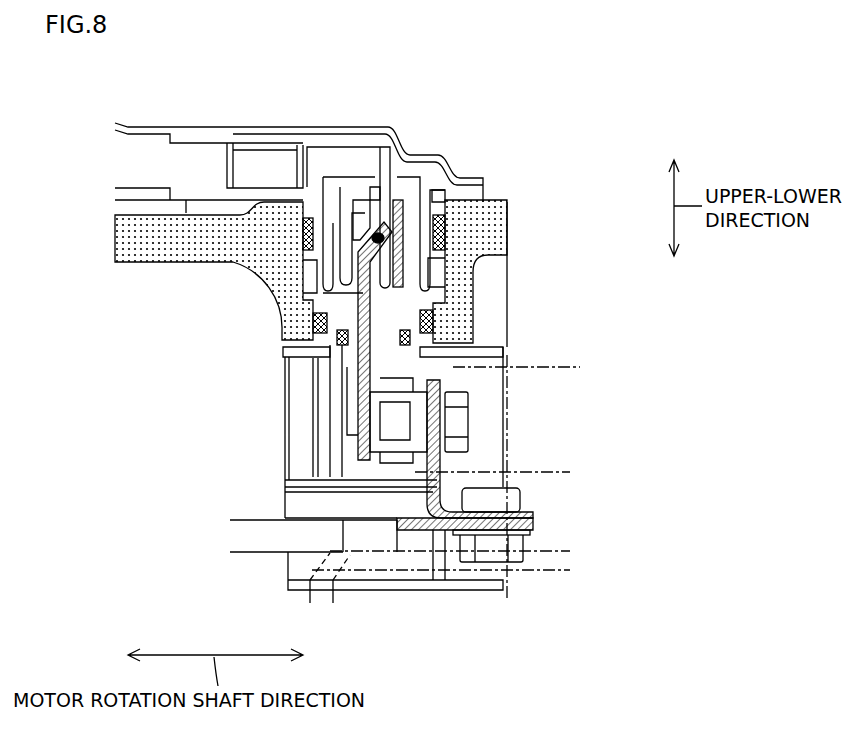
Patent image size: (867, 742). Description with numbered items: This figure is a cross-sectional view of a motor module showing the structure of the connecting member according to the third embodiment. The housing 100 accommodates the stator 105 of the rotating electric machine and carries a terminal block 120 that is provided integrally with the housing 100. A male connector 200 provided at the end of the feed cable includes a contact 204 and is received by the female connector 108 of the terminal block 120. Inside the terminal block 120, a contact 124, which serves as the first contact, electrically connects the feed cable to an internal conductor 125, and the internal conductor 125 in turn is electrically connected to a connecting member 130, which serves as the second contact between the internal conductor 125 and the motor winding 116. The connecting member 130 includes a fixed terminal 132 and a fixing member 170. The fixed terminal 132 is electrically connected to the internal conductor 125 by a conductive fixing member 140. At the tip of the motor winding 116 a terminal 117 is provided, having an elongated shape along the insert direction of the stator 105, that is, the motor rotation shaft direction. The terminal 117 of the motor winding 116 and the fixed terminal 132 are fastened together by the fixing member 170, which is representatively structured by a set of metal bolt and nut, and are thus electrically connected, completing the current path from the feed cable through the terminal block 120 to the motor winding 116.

The housing 100 is at (157, 243).
The stator 105 is at (176, 365).
The female connector 108 is at (445, 252).
The motor winding 116 is at (262, 540).
The terminal 117 is at (418, 532).
The terminal block 120 is at (372, 337).
The contact 124 is at (377, 240).
The internal conductor 125 is at (372, 297).
The connecting member 130 is at (548, 474).
The fixed terminal 132 is at (442, 465).
The fixing member 140 is at (457, 420).
The fixing member 170 is at (515, 503).
The male connector 200 is at (240, 125).
The contact 204 is at (362, 147).